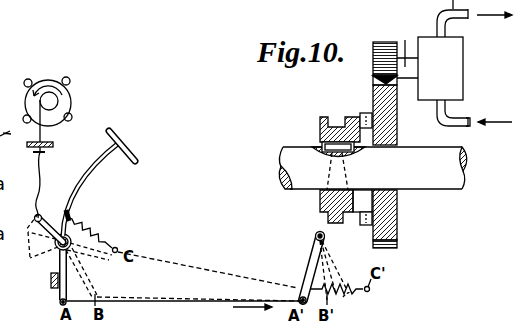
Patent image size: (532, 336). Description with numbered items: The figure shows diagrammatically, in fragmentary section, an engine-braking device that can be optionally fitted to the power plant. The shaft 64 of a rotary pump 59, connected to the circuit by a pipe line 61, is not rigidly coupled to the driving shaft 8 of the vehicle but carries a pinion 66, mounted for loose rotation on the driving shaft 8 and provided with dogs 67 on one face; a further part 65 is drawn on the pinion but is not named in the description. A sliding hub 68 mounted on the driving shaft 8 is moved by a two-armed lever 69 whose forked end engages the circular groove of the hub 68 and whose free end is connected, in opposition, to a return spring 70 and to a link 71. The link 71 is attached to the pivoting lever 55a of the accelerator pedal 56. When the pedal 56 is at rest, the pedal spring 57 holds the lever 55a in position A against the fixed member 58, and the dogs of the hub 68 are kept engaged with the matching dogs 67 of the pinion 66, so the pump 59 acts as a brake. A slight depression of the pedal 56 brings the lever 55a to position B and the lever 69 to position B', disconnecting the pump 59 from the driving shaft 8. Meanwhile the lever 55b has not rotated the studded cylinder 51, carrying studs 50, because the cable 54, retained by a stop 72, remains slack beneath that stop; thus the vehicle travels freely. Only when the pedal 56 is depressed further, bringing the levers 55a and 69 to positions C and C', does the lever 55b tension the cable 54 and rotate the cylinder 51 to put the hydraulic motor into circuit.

The driving shaft 8 is at (461, 186).
The stud 50 is at (65, 80).
The studded cylinder 51 is at (48, 78).
The cable 54 is at (40, 113).
The pivoting lever 55a is at (66, 275).
The lever 55b is at (42, 215).
The accelerator pedal 56 is at (127, 150).
The pedal spring 57 is at (103, 234).
The fixed member 58 is at (53, 288).
The rotary pump 59 is at (459, 57).
The pipe line 61 is at (462, 127).
The shaft of rotary pump 64 is at (396, 35).
The gear rim 65 is at (373, 78).
The pinion 66 is at (394, 218).
The dogs 67 is at (364, 113).
The sliding hub 68 is at (318, 126).
The two-armed lever 69 is at (313, 258).
The return spring 70 is at (345, 297).
The link 71 is at (218, 300).
The stop 72 is at (53, 145).